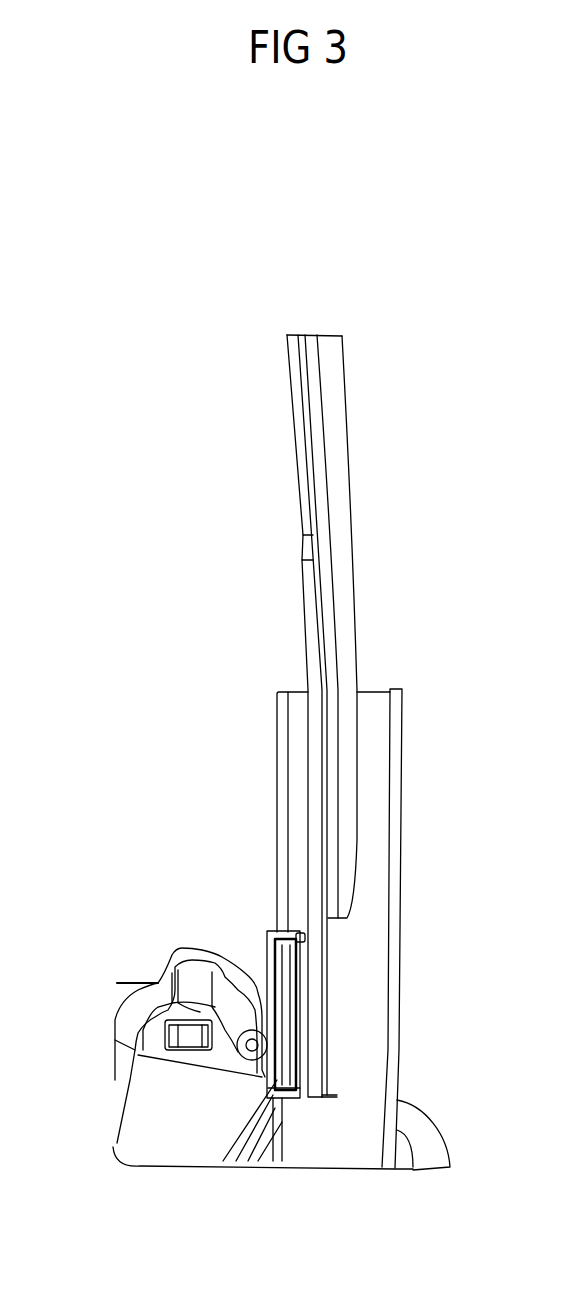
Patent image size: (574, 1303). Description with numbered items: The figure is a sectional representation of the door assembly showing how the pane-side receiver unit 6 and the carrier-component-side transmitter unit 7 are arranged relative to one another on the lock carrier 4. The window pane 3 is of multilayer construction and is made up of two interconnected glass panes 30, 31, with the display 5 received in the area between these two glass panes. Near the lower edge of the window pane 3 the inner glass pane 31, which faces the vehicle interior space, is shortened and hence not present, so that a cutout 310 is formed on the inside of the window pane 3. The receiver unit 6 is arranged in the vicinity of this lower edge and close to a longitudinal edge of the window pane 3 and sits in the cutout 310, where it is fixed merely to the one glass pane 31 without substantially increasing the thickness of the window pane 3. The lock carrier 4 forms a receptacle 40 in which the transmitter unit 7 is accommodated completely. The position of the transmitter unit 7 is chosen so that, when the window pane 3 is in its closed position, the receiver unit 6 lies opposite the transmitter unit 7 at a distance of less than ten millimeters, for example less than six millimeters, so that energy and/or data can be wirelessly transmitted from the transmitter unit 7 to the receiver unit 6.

The window pane 3 is at (320, 658).
The glass pane 30 is at (350, 638).
The inner glass pane 31 is at (300, 445).
The cutout 310 is at (303, 535).
The display 5 is at (313, 330).
The receiver unit 6 is at (305, 613).
The lock carrier 4 is at (397, 1048).
The receptacle 40 is at (268, 932).
The transmitter unit 7 is at (275, 963).